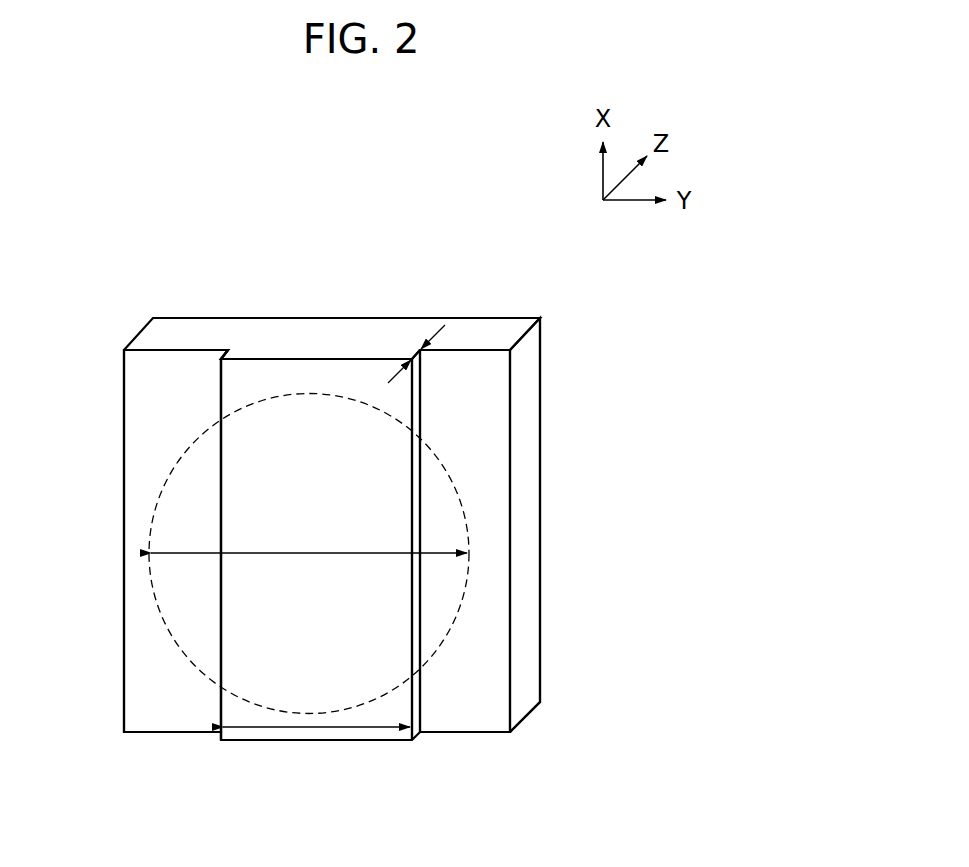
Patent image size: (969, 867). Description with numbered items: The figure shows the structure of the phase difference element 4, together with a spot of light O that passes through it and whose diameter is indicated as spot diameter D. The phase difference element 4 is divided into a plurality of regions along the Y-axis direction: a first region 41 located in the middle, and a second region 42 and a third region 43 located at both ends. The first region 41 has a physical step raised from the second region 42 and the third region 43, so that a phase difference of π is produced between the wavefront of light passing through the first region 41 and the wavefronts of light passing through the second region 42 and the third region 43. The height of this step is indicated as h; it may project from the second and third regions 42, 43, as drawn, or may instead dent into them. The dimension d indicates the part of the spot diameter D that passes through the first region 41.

The phase difference element 4 is at (123, 389).
The first region 41 is at (255, 378).
The second region 42 is at (145, 683).
The third region 43 is at (475, 668).
The spot of light O is at (452, 483).
The spot diameter D is at (309, 538).
The part of the spot diameter passing through the first region d is at (320, 727).
The height of the phase difference h is at (417, 355).